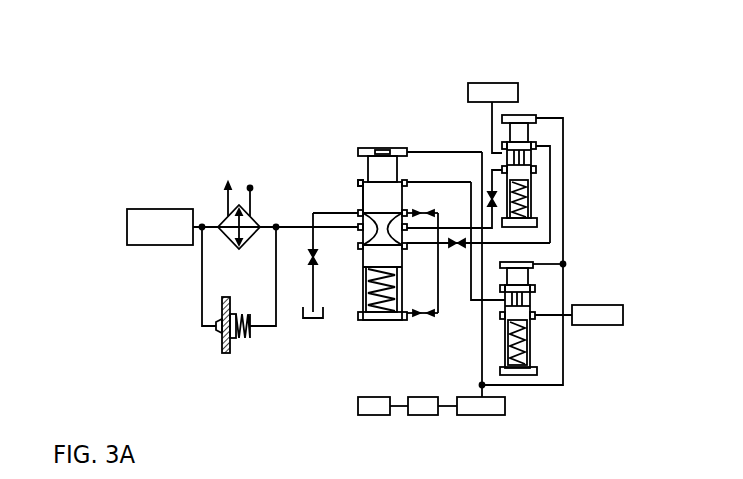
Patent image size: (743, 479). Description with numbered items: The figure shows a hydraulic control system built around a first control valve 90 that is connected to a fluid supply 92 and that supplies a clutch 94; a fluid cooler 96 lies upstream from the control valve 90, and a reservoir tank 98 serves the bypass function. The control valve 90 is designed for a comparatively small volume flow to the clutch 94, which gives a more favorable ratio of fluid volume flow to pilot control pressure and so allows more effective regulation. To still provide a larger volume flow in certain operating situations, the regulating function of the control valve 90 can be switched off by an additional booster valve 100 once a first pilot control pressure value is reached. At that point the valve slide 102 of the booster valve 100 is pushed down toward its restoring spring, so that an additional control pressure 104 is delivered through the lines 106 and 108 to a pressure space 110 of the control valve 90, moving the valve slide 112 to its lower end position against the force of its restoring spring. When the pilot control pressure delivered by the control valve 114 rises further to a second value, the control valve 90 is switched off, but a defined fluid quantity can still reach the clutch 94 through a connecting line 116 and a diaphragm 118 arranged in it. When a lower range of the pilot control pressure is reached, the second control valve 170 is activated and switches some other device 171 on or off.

The first control valve 90 is at (350, 145).
The fluid supply 92 is at (140, 222).
The clutch 94 is at (510, 92).
The fluid cooler 96 is at (225, 220).
The reservoir tank 98 is at (312, 320).
The booster valve 100 is at (548, 254).
The valve slide 102 is at (520, 278).
The additional control pressure 104 is at (605, 313).
The line 106 is at (545, 317).
The line 108 is at (462, 297).
The pressure space 110 is at (357, 182).
The valve slide 112 is at (360, 195).
The control valve 114 is at (503, 403).
The connecting line 116 is at (457, 220).
The diaphragm 118 is at (478, 195).
The second control valve 170 is at (427, 410).
The other device 171 is at (375, 410).